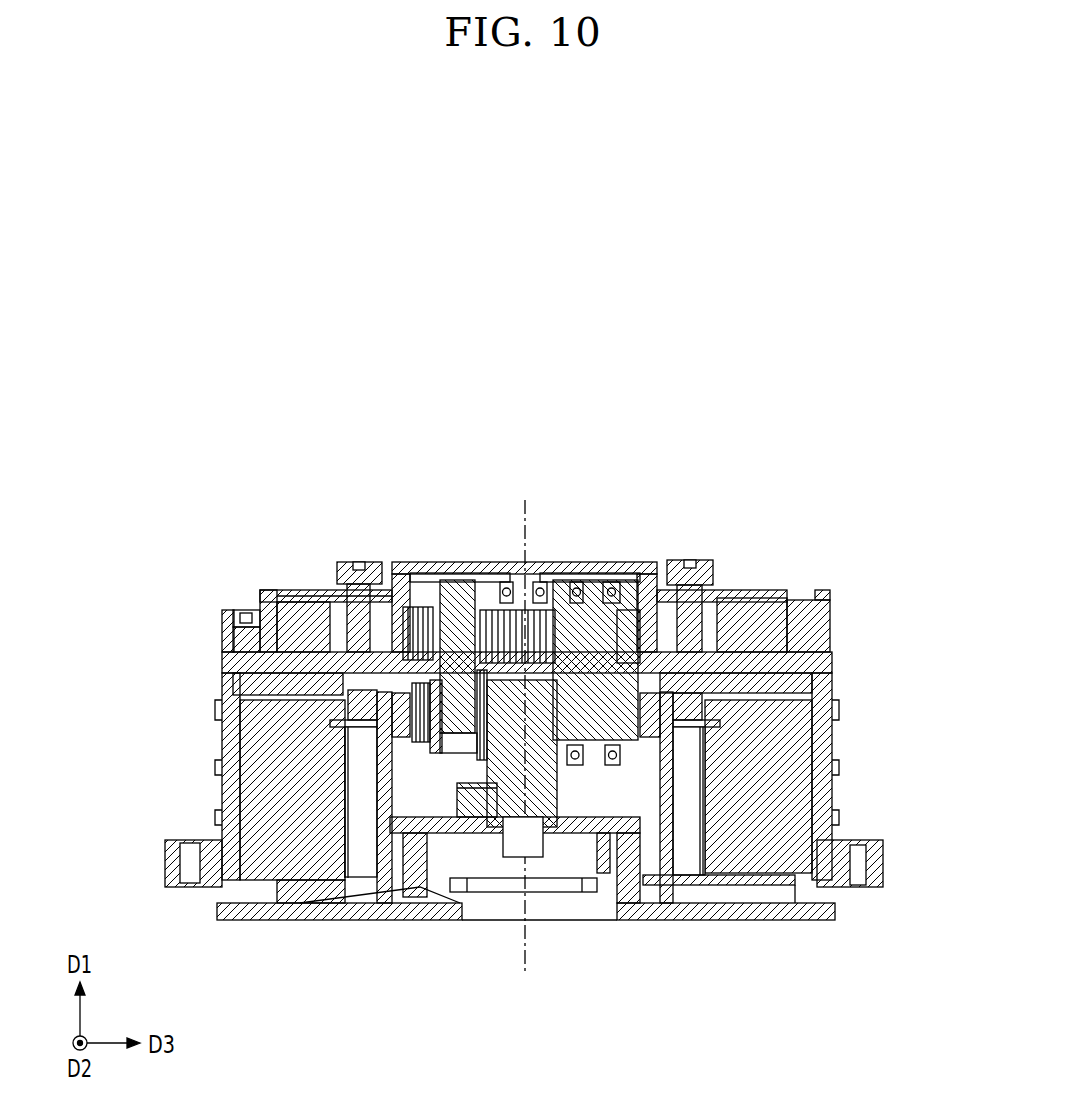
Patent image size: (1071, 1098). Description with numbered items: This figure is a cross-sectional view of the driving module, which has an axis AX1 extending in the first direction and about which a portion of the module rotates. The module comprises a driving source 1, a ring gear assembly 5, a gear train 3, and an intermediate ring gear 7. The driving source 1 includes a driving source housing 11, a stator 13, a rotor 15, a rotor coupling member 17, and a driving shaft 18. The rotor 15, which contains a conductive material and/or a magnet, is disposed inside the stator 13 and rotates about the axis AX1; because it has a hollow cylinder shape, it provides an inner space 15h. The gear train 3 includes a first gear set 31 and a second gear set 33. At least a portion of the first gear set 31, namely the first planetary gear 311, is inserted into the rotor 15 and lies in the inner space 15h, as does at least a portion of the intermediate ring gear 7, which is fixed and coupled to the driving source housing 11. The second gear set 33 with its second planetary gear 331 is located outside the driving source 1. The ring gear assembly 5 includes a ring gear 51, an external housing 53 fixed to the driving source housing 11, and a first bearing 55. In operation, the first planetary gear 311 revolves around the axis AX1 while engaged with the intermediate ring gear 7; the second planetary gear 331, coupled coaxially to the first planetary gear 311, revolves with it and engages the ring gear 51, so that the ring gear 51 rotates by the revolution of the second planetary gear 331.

The driving source 1 is at (480, 796).
The gear train 3 is at (694, 715).
The ring gear assembly 5 is at (526, 550).
The intermediate ring gear 7 is at (225, 660).
The driving source housing 11 is at (225, 706).
The stator 13 is at (258, 753).
The rotor 15 is at (360, 778).
The inner space 15h is at (640, 803).
The rotor coupling member 17 is at (380, 802).
The driving shaft 18 is at (520, 808).
The first gear set 31 is at (703, 718).
The second gear set 33 is at (676, 666).
The ring gear 51 is at (398, 562).
The external housing 53 is at (268, 600).
The first bearing 55 is at (312, 603).
The first planetary gear 311 is at (613, 707).
The second planetary gear 331 is at (623, 638).
The axis AX1 is at (528, 507).